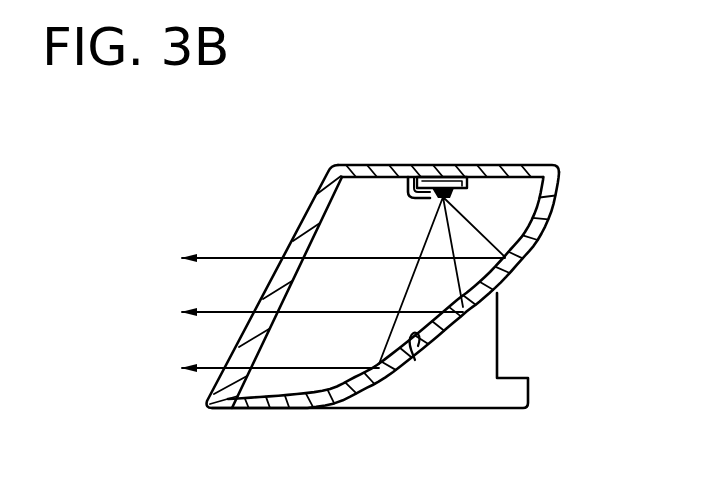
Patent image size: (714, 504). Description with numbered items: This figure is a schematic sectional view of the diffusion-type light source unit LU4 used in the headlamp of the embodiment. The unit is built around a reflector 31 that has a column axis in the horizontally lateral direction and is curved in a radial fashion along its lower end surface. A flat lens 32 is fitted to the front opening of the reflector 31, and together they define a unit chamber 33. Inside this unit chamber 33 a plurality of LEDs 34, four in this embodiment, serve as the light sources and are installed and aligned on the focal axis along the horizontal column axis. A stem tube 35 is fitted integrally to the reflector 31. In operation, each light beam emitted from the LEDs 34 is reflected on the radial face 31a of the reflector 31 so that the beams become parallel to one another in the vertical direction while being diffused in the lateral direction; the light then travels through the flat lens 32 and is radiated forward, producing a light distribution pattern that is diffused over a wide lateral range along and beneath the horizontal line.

The diffusion-type light source unit LU4 is at (503, 136).
The reflector 31 is at (545, 222).
The radial face 31a is at (415, 360).
The flat lens 32 is at (278, 296).
The unit chamber 33 is at (348, 224).
The LEDs 34 is at (405, 165).
The stem tube 35 is at (483, 357).